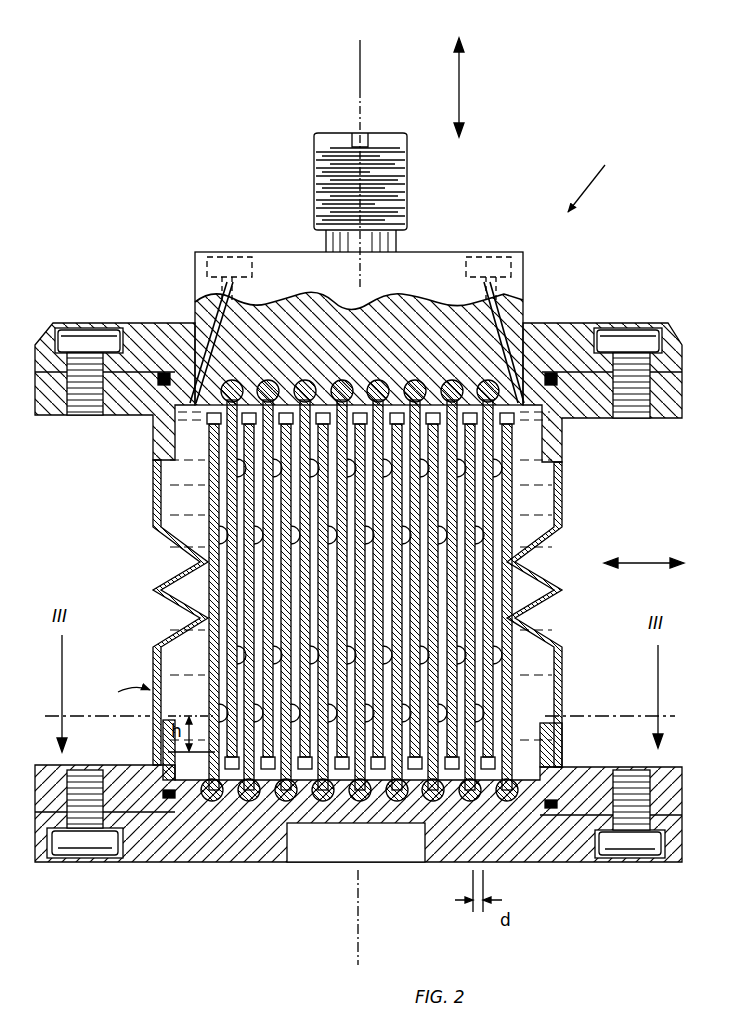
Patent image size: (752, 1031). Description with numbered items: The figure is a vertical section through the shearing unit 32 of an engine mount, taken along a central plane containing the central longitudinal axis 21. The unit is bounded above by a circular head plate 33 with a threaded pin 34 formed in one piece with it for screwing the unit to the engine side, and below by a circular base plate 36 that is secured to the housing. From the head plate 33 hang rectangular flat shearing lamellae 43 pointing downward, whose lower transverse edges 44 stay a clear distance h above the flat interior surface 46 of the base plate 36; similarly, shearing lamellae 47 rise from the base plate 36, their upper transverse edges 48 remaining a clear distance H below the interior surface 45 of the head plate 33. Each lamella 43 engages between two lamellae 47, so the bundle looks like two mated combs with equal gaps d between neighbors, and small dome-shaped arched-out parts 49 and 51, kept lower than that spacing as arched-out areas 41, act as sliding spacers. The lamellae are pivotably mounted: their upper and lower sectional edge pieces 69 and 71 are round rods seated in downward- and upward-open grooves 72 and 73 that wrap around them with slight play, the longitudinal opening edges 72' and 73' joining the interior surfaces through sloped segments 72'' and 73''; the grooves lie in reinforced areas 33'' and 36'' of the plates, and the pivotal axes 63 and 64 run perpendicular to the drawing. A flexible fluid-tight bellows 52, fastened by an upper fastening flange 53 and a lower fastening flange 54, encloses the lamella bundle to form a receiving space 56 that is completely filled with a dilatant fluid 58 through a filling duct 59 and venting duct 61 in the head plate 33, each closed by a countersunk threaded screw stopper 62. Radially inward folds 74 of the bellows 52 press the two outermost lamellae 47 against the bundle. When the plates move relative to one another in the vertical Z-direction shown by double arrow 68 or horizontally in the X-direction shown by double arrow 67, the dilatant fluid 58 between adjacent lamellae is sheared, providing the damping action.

The central longitudinal axis 21 is at (362, 86).
The shearing unit 32 is at (356, 419).
The head plate 33 is at (402, 328).
The reinforced area of the head plate 33'' is at (594, 422).
The threaded pin 34 is at (316, 192).
The base plate 36 is at (358, 810).
The reinforced area of the base plate 36'' is at (144, 765).
The arched-out areas 41 is at (218, 720).
The shearing lamellae 43 is at (267, 503).
The lower transverse edges 44 is at (268, 780).
The interior surface of the head plate 45 is at (160, 432).
The interior surface of the base plate 46 is at (235, 780).
The shearing lamellae 47 is at (247, 617).
The upper transverse edges 48 is at (214, 416).
The arched-out parts 49 is at (217, 534).
The arched-out parts 51 is at (500, 653).
The bellows 52 is at (563, 521).
The upper fastening flange 53 is at (647, 425).
The lower fastening flange 54 is at (600, 768).
The receiving space 56 is at (545, 694).
The dilatant fluid 58 is at (537, 484).
The filling duct 59 is at (197, 318).
The venting duct 61 is at (492, 322).
The countersunk threaded screw stopper 62 is at (227, 257).
The pivotal axes 63 is at (316, 385).
The pivotal axes 64 is at (467, 785).
The double arrow 67 is at (643, 565).
The double arrow 68 is at (460, 89).
The upper sectional edge pieces 69 is at (412, 332).
The lower sectional edge pieces 71 is at (372, 803).
The grooves 72 is at (384, 315).
The longitudinal opening edges 72' is at (563, 437).
The segment 72'' is at (550, 464).
The grooves 73 is at (299, 863).
The longitudinal opening edges 73' is at (284, 841).
The segment 73'' is at (336, 841).
The folds 74 is at (575, 604).